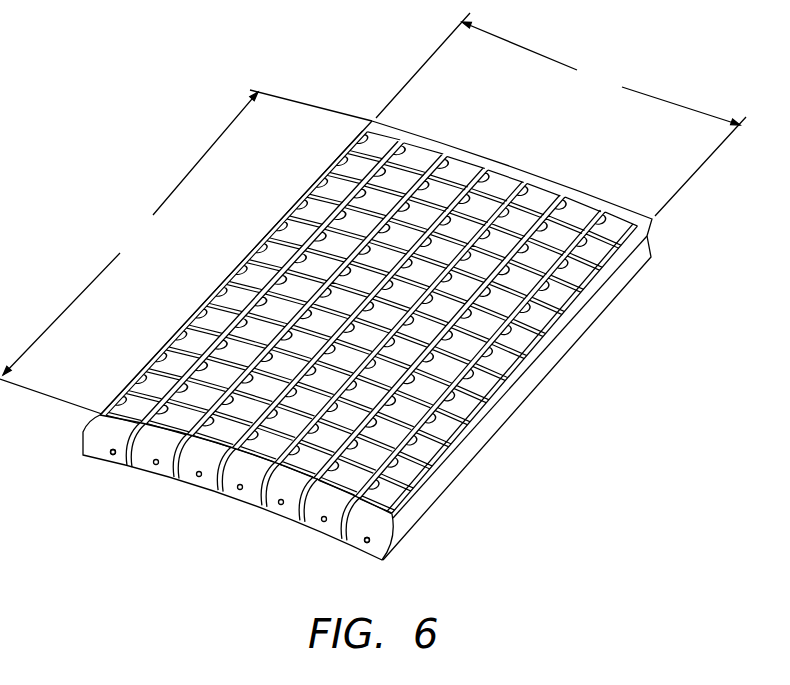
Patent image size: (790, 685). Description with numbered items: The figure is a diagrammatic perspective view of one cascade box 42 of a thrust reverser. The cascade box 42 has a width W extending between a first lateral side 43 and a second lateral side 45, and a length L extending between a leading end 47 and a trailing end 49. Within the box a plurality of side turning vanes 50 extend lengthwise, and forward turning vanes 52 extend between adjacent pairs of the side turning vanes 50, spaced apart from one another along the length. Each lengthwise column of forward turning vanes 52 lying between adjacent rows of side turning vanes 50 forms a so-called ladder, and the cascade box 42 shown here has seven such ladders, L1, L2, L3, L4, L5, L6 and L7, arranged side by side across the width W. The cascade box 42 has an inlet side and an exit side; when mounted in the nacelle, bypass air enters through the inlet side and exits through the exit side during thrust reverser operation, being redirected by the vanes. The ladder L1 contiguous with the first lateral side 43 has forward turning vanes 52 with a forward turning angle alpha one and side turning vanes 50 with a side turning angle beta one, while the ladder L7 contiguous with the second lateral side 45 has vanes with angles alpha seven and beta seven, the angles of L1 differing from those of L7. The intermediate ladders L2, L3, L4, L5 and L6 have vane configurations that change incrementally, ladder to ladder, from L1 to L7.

The cascade box 42 is at (652, 322).
The first lateral side 43 is at (212, 291).
The second lateral side 45 is at (545, 375).
The leading end 47 is at (145, 472).
The trailing end 49 is at (511, 179).
The side turning vanes 50 is at (473, 433).
The forward turning vanes 52 is at (456, 485).
The length L is at (186, 252).
The width W is at (561, 114).
The ladder L1 is at (396, 125).
The ladder L2 is at (433, 140).
The ladder L3 is at (470, 166).
The ladder L4 is at (532, 188).
The ladder L5 is at (553, 200).
The ladder L6 is at (587, 207).
The ladder L7 is at (627, 223).